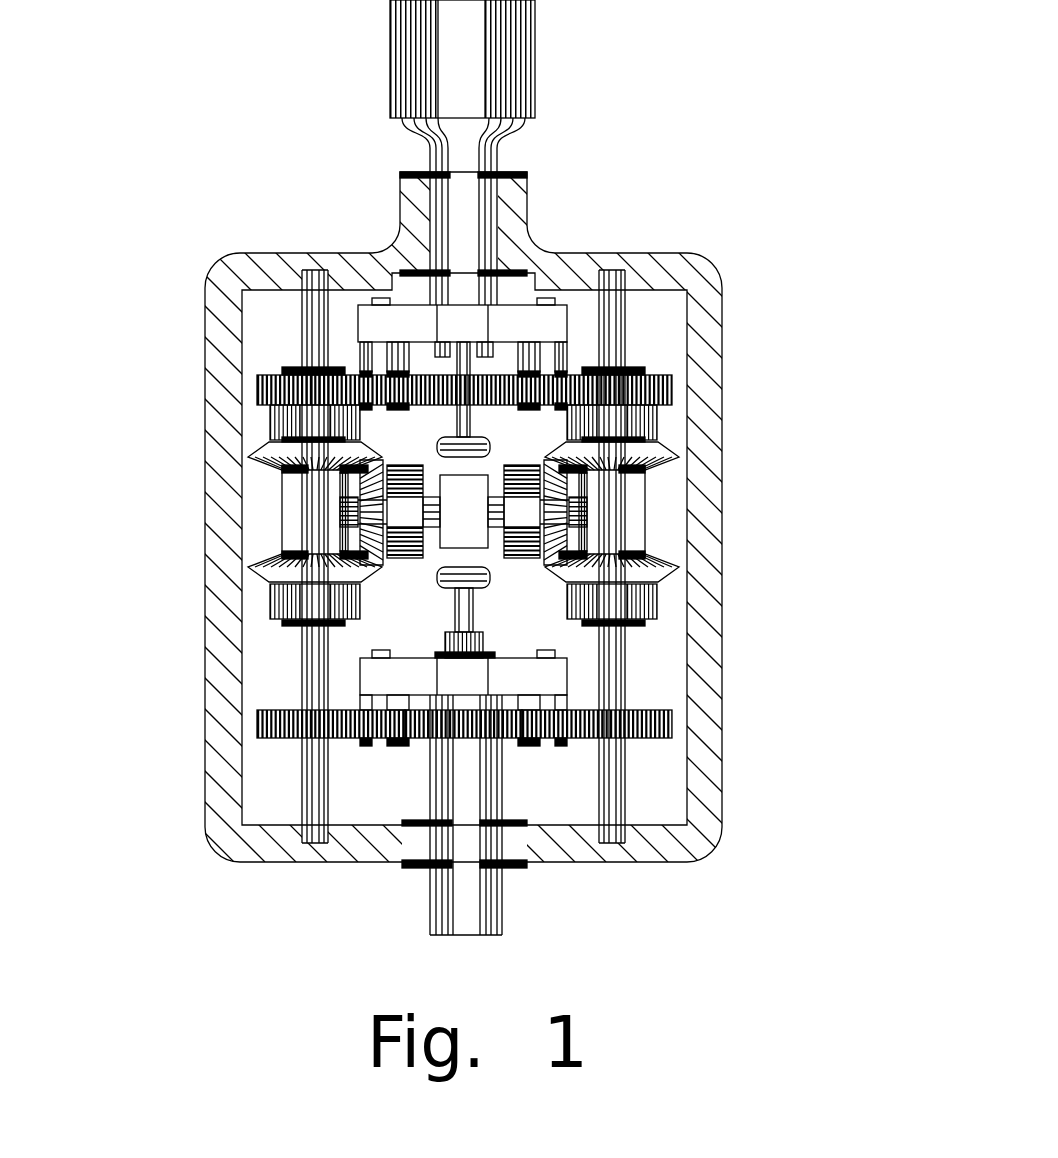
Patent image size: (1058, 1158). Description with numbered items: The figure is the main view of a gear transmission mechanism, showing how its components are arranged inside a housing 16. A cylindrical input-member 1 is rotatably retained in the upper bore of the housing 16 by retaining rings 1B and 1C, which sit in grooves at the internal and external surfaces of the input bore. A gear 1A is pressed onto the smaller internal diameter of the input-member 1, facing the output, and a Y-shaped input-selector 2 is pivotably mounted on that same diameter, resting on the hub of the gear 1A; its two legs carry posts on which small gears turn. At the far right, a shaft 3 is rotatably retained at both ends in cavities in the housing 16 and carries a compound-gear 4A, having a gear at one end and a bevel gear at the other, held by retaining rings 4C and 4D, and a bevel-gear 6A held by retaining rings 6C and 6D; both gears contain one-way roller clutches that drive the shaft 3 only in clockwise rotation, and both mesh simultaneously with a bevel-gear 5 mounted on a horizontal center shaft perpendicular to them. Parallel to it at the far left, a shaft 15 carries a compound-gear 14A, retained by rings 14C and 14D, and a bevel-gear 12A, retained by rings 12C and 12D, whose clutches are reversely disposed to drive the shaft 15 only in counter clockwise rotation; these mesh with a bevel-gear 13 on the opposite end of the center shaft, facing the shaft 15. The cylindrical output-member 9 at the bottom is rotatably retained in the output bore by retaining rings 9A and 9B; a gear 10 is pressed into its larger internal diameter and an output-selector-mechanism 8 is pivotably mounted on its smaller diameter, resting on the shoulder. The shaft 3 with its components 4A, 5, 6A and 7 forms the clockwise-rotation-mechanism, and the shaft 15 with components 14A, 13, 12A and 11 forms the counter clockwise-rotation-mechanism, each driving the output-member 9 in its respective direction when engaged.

The input-member 1 is at (556, 59).
The gear 1A is at (573, 382).
The retaining ring 1B is at (546, 204).
The retaining ring 1C is at (507, 268).
The input-selector 2 is at (586, 305).
The shaft 3 is at (726, 540).
The compound-gear 4A is at (713, 403).
The retaining ring 4C is at (733, 340).
The retaining ring 4D is at (705, 456).
The bevel-gear 5 is at (642, 511).
The bevel-gear 6A is at (700, 594).
The retaining ring 6C is at (722, 524).
The retaining ring 6D is at (728, 614).
The clockwise-rotation-mechanism component 7 is at (701, 726).
The output-selector-mechanism 8 is at (588, 667).
The output-member 9 is at (554, 821).
The retaining ring 9A is at (347, 878).
The retaining ring 9B is at (347, 888).
The gear 10 is at (311, 776).
The counter clockwise-rotation-mechanism component 11 is at (257, 743).
The bevel-gear 12A is at (218, 582).
The retaining ring 12C is at (227, 512).
The retaining ring 12D is at (231, 600).
The bevel-gear 13 is at (274, 502).
The compound-gear 14A is at (214, 385).
The retaining ring 14C is at (196, 317).
The retaining ring 14D is at (217, 428).
The shaft 15 is at (203, 527).
The housing 16 is at (529, 503).